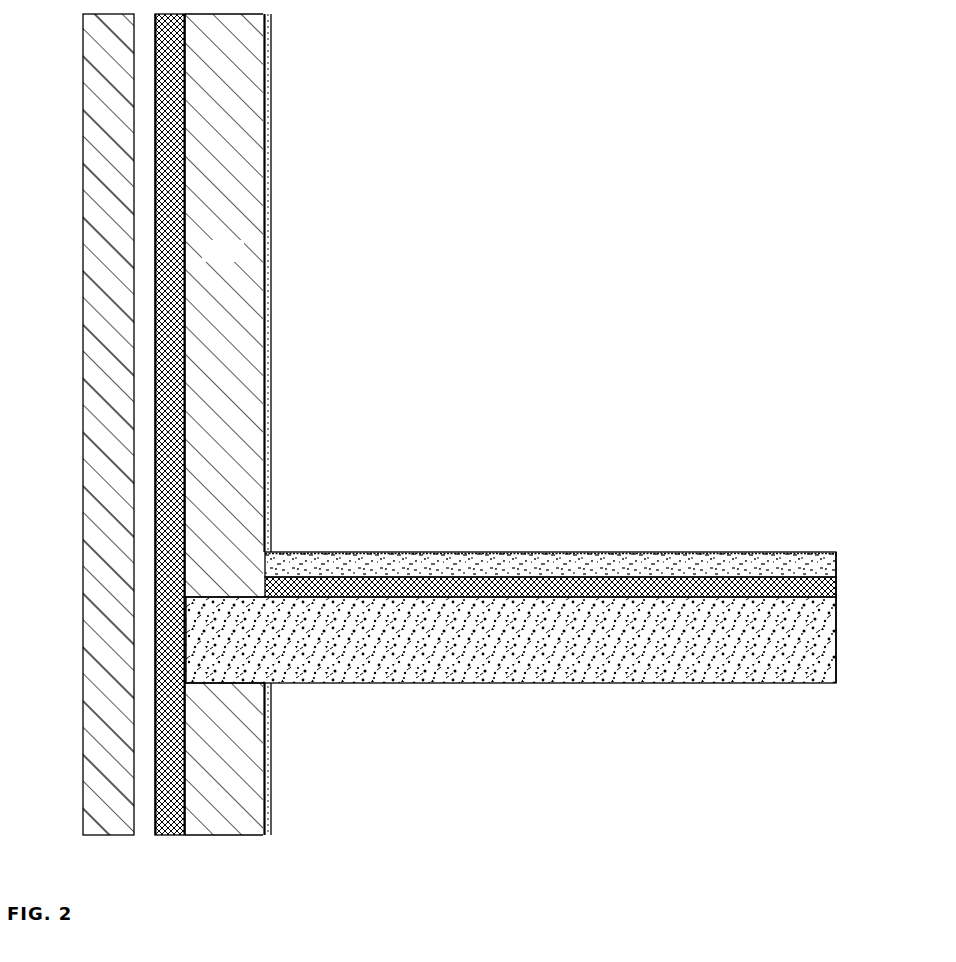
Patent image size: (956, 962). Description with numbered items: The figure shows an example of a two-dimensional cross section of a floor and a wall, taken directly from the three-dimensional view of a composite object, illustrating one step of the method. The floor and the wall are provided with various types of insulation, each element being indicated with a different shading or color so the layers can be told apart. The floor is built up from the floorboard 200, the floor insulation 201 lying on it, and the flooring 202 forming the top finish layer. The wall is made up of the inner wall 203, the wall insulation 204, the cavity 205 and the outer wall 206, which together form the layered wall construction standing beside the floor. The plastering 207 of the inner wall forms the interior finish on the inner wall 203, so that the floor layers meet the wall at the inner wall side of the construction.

The floorboard 200 is at (535, 617).
The floor insulation 201 is at (572, 589).
The flooring 202 is at (574, 564).
The inner wall 203 is at (225, 424).
The wall insulation 204 is at (165, 326).
The cavity 205 is at (145, 373).
The outer wall 206 is at (102, 264).
The plastering of the inner wall 207 is at (267, 400).